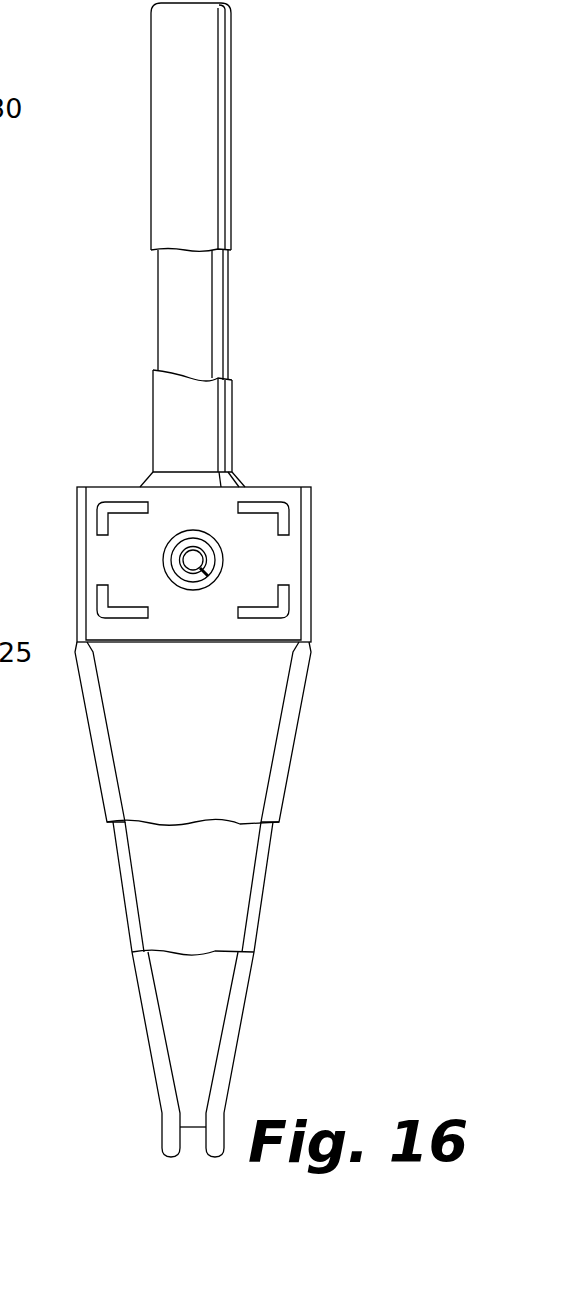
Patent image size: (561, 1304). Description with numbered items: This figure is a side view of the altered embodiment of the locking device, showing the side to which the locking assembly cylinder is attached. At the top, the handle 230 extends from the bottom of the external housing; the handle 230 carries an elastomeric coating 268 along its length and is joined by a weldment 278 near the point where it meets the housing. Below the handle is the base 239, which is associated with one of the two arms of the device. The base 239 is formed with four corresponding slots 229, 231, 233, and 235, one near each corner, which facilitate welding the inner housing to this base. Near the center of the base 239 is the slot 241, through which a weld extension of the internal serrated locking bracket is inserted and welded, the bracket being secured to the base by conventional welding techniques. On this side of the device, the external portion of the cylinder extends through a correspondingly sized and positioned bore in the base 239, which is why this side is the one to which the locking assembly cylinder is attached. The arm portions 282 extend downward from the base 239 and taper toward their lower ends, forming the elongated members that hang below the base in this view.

The handle 230 is at (141, 182).
The elastomeric coating 268 is at (200, 148).
The weldment 278 is at (237, 478).
The slot 229 is at (108, 505).
The slot 235 is at (282, 509).
The slot 231 is at (97, 595).
The slot 233 is at (282, 607).
The slot 241 is at (210, 562).
The base 239 is at (185, 618).
The legs 282 is at (280, 808).